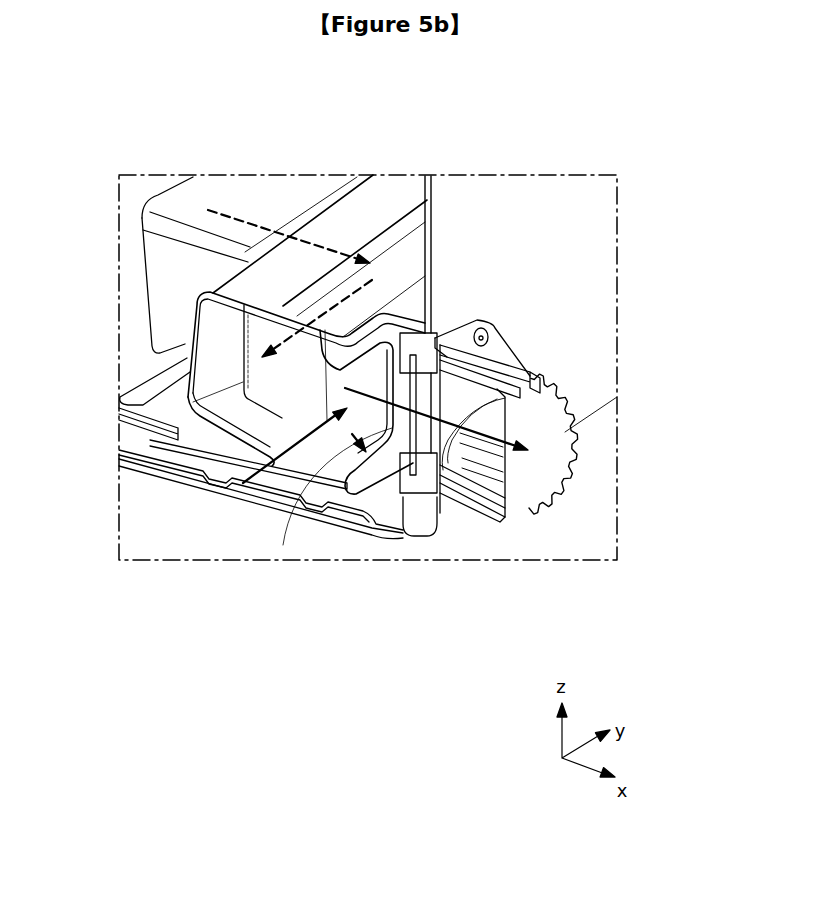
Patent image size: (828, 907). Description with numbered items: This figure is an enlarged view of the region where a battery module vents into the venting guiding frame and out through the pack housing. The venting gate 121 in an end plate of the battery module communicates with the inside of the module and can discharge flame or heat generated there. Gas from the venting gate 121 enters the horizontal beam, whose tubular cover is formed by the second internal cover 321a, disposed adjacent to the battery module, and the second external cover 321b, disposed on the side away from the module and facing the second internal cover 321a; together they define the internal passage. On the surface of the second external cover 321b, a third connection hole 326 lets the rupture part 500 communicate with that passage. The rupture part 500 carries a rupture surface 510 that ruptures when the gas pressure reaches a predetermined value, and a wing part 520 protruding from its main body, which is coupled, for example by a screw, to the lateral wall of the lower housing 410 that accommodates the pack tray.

The venting gate 121 is at (238, 200).
The second internal cover 321a is at (188, 350).
The second external cover 321b is at (377, 200).
The third connection hole 326 is at (283, 545).
The lower housing 410 is at (493, 213).
The rupture part 500 is at (488, 524).
The rupture surface 510 is at (393, 430).
The wing part 520 is at (507, 355).